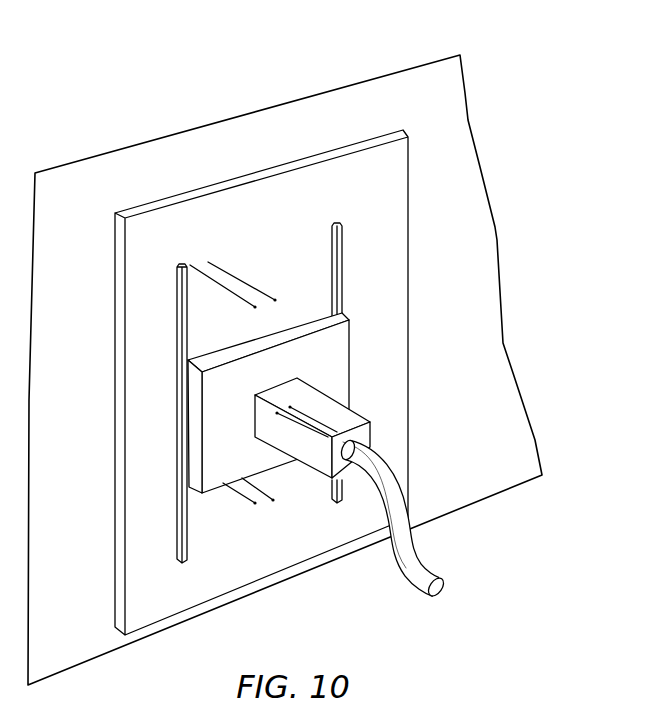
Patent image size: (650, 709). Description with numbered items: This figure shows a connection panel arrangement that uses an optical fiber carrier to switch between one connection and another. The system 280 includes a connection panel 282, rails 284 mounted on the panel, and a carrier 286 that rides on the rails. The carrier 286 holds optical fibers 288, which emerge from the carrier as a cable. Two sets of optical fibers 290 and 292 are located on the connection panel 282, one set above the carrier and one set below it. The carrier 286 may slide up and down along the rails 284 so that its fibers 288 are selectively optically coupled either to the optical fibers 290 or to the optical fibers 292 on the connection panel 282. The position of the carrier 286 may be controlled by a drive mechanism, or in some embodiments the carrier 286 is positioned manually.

The system 280 is at (285, 369).
The connection panel 282 is at (450, 444).
The rails 284 is at (182, 266).
The carrier 286 is at (304, 374).
The optical fibers 288 is at (336, 426).
The optical fibers 290 is at (248, 276).
The optical fibers 292 is at (220, 507).